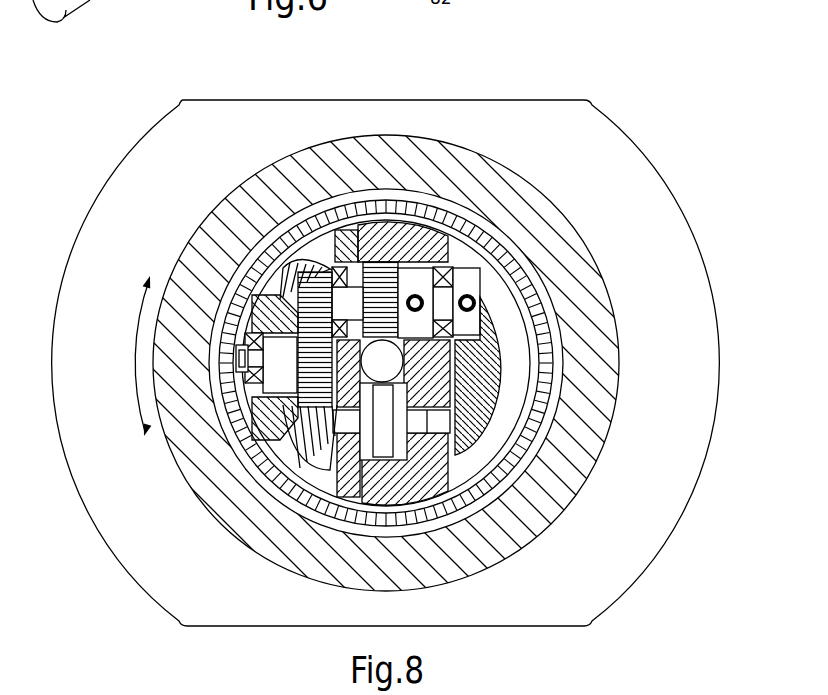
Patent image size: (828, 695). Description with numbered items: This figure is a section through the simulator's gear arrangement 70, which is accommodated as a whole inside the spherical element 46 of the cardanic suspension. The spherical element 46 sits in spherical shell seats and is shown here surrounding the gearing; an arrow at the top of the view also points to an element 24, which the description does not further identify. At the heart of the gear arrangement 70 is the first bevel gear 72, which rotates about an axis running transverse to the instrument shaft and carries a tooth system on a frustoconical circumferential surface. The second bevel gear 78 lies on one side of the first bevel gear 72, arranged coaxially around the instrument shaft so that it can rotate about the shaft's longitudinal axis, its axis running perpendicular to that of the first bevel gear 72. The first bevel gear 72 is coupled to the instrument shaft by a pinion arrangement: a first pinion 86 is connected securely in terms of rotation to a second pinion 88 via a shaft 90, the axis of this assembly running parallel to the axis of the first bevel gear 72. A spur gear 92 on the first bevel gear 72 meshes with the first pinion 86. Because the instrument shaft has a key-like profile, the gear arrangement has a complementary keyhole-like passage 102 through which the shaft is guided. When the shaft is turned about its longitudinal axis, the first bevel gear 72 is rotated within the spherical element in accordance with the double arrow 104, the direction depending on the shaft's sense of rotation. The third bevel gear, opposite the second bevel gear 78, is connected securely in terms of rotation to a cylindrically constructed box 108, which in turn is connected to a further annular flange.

The drive assembly 24 is at (651, 138).
The spherical element 46 is at (137, 514).
The gear arrangement 70 is at (222, 229).
The first bevel gear 72 is at (248, 292).
The second bevel gear 78 is at (307, 460).
The first pinion 86 is at (303, 283).
The second pinion 88 is at (385, 280).
The shaft 90 is at (347, 232).
The spur gear 92 is at (270, 430).
The keyhole-like passage 102 is at (498, 360).
The double arrow 104 is at (130, 355).
The cylindrically constructed box 108 is at (453, 497).